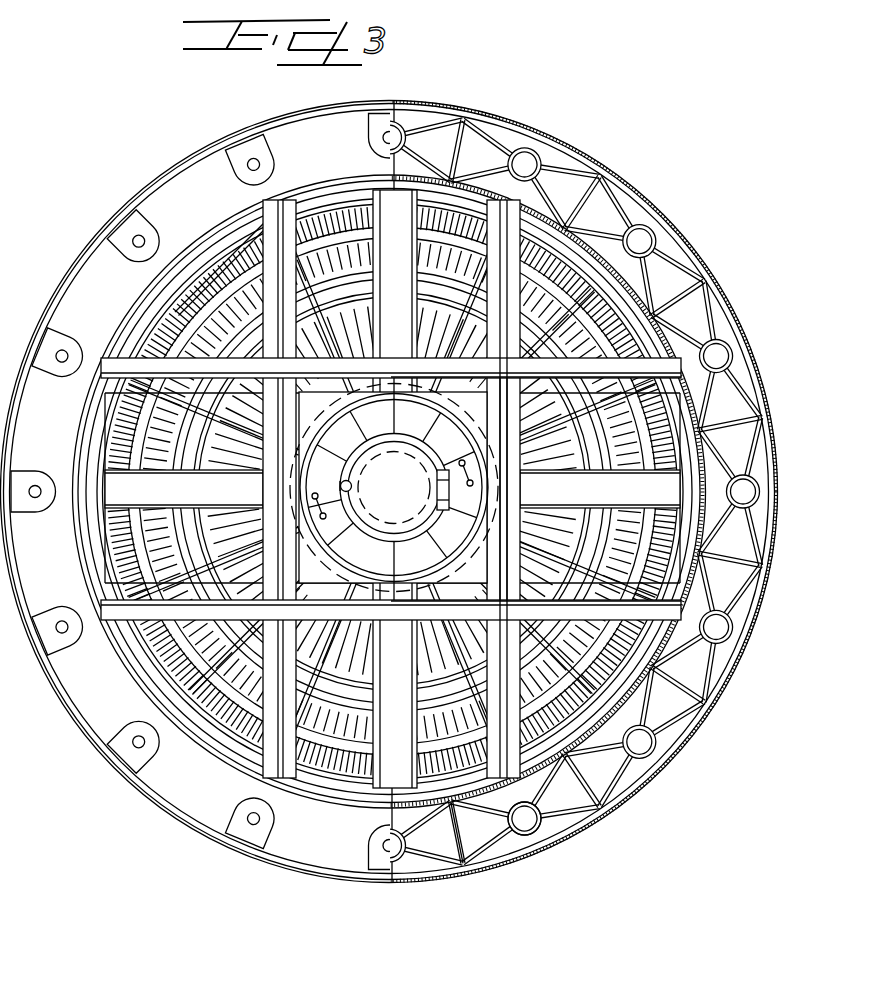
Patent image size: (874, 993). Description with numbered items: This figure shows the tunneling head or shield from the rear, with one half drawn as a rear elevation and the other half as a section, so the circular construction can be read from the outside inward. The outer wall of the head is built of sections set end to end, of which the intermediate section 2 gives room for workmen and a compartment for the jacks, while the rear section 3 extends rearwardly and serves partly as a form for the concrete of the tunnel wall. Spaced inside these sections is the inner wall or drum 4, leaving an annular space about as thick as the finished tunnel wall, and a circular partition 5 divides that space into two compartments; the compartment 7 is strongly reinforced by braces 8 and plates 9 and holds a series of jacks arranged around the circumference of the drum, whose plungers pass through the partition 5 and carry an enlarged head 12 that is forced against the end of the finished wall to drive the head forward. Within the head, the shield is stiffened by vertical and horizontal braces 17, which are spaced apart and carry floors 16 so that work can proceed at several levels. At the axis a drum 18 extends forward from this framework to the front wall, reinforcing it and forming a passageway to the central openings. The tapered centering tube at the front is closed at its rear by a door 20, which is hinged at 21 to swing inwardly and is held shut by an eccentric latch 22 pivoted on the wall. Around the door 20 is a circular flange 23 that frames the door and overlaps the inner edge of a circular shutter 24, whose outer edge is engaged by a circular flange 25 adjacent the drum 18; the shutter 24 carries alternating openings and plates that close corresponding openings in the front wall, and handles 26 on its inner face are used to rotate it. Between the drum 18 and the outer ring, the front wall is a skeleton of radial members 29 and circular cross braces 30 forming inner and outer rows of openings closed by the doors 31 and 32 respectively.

The intermediate section 2 is at (678, 758).
The rear section 3 is at (72, 737).
The inner wall or drum 4 is at (132, 672).
The circular partition 5 is at (216, 806).
The forward compartment 7 is at (615, 230).
The braces 8 is at (528, 837).
The plates 9 is at (466, 860).
The enlarged head 12 is at (152, 760).
The floors 16 is at (522, 378).
The vertical and horizontal braces 17 is at (272, 470).
The drum 18 is at (318, 540).
The door 20 is at (394, 488).
The hinge 21 is at (438, 488).
The eccentric latch 22 is at (368, 488).
The circular flange 23 is at (430, 420).
The circular shutter 24 is at (412, 412).
The circular flange 25 is at (306, 446).
The handles 26 is at (450, 497).
The radial members 29 is at (392, 491).
The circular cross braces 30 is at (395, 230).
The doors 31 is at (665, 470).
The doors 32 is at (618, 512).